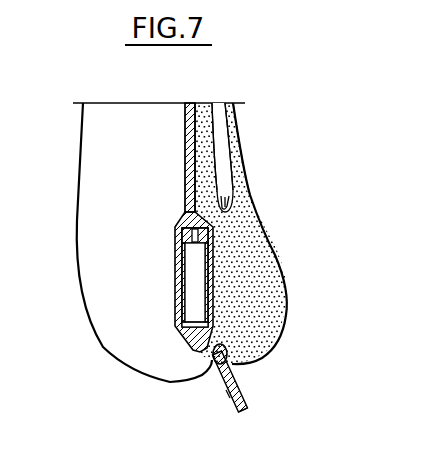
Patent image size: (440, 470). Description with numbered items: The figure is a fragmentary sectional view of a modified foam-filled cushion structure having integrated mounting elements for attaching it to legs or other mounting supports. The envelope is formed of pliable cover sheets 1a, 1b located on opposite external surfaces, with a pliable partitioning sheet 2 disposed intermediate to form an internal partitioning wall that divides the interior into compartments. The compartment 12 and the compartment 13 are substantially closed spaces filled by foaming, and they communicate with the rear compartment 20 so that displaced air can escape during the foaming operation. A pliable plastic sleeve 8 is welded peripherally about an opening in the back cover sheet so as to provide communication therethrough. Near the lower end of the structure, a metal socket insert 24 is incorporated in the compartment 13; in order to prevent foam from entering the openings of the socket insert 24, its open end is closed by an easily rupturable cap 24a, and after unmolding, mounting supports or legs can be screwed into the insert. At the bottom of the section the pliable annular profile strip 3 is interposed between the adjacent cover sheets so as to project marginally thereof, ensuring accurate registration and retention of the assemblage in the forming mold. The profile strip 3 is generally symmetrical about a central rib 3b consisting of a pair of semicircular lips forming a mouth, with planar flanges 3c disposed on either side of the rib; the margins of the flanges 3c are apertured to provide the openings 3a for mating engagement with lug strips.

The cover sheet 1a is at (252, 188).
The cover sheet 1b is at (78, 293).
The partitioning sheet 2 is at (184, 152).
The profile strip 3 is at (228, 347).
The openings 3a is at (245, 407).
The central rib 3b is at (232, 368).
The planar flanges 3c is at (228, 395).
The pliable plastic sleeve 8 is at (212, 140).
The compartment 12 is at (130, 194).
The compartment 13 is at (202, 117).
The rear compartment 20 is at (247, 292).
The metal socket insert 24 is at (213, 253).
The rupturable cap 24a is at (211, 220).